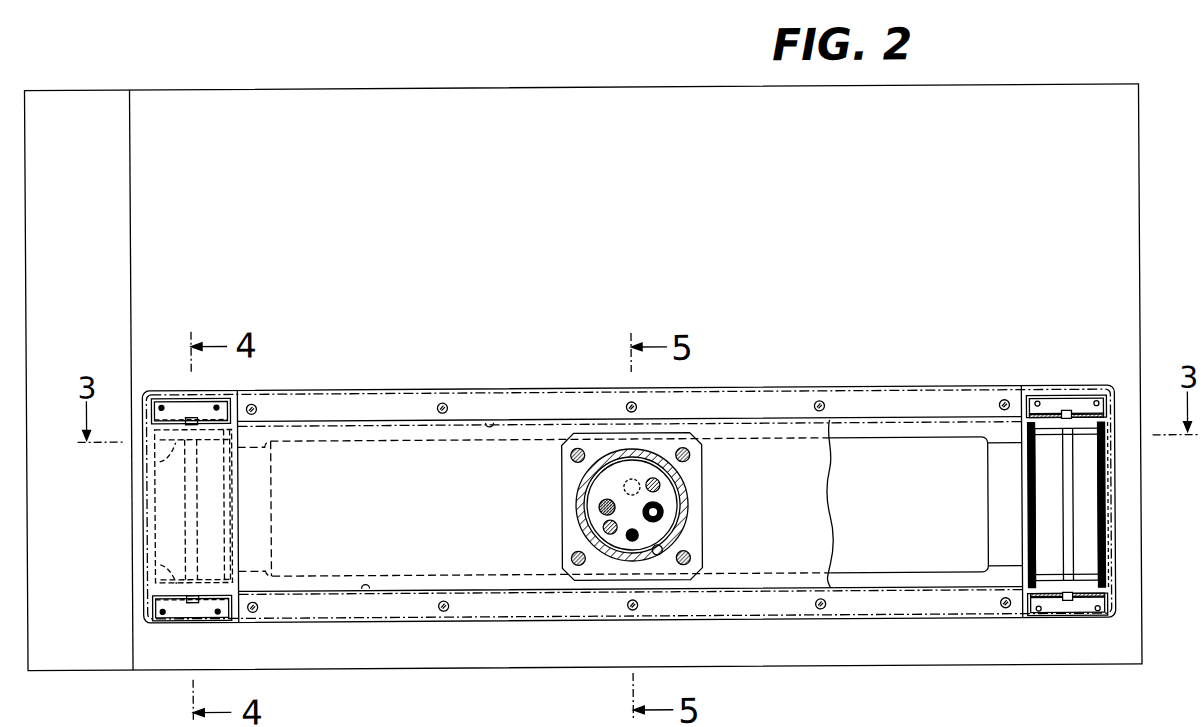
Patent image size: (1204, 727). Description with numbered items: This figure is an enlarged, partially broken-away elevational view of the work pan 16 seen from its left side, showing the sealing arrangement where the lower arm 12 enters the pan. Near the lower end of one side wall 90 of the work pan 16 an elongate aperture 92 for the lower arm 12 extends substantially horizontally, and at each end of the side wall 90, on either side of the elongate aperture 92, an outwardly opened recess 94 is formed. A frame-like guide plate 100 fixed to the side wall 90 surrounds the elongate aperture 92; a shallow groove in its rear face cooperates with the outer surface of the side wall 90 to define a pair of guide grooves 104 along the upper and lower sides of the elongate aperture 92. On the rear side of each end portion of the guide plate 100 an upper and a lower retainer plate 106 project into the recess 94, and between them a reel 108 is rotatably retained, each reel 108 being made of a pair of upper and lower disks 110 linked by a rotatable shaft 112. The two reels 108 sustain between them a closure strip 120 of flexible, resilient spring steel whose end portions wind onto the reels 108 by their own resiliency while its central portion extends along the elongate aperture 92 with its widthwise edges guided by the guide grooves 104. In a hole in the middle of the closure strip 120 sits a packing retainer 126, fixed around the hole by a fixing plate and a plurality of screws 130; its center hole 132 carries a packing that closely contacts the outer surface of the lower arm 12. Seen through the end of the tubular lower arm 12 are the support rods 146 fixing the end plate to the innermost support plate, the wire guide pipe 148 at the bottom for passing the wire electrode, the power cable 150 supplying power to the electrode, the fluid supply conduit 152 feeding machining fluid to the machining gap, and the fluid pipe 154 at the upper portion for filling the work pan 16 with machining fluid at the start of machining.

The work pan 16 is at (281, 72).
The side wall 90 is at (452, 101).
The guide plate 100 is at (393, 399).
The guide grooves 104 is at (490, 424).
The retainer plates 106 is at (177, 410).
The recess 94 is at (149, 516).
The reel 108 is at (165, 590).
The disks 110 is at (165, 461).
The rotatable shaft 112 is at (197, 486).
The closure strip 120 is at (483, 593).
The elongate aperture 92 is at (880, 445).
The packing retainer 126 is at (597, 445).
The lower arm 12 is at (680, 493).
The screws 130 is at (571, 457).
The fluid pipe 154 is at (623, 490).
The support rods 146 is at (653, 481).
The power cable 150 is at (599, 511).
The fluid supply conduit 152 is at (663, 518).
The wire guide pipe 148 is at (630, 545).
The center hole 132 is at (647, 555).